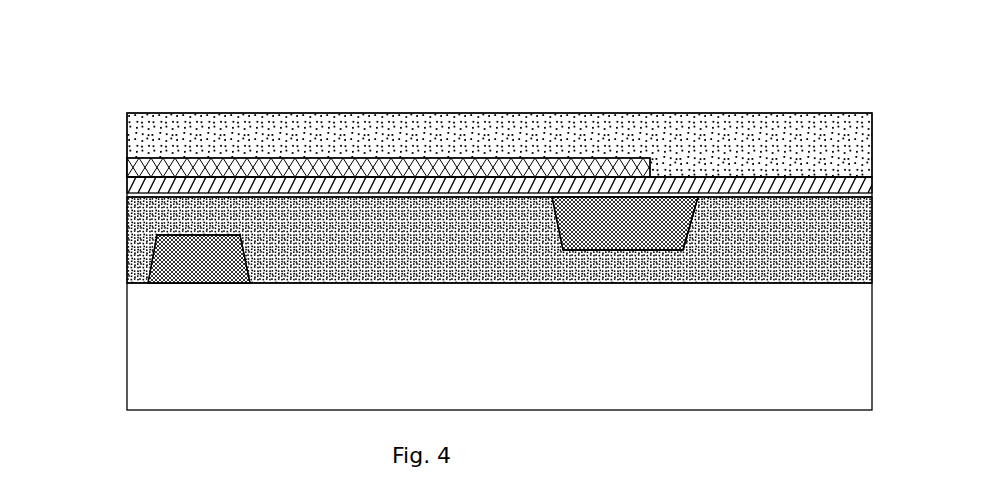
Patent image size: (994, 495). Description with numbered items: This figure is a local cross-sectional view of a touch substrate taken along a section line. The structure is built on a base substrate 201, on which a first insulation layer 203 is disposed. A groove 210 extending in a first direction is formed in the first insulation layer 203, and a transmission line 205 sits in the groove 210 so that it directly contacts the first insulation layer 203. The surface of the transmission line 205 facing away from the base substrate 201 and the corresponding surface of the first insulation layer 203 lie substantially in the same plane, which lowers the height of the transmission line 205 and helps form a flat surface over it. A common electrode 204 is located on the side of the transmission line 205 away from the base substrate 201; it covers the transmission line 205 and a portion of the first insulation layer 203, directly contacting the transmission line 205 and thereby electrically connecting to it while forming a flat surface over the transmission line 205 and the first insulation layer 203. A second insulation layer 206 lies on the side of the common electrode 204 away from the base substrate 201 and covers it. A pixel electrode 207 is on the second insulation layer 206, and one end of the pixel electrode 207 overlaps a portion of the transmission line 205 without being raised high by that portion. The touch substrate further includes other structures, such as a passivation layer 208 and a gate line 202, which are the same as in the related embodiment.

The base substrate 201 is at (138, 338).
The gate line 202 is at (150, 280).
The first insulation layer 203 is at (137, 235).
The common electrode 204 is at (130, 185).
The transmission line 205 is at (678, 197).
The second insulation layer 206 is at (128, 167).
The pixel electrode 207 is at (525, 172).
The passivation layer 208 is at (290, 118).
The groove 210 is at (690, 233).